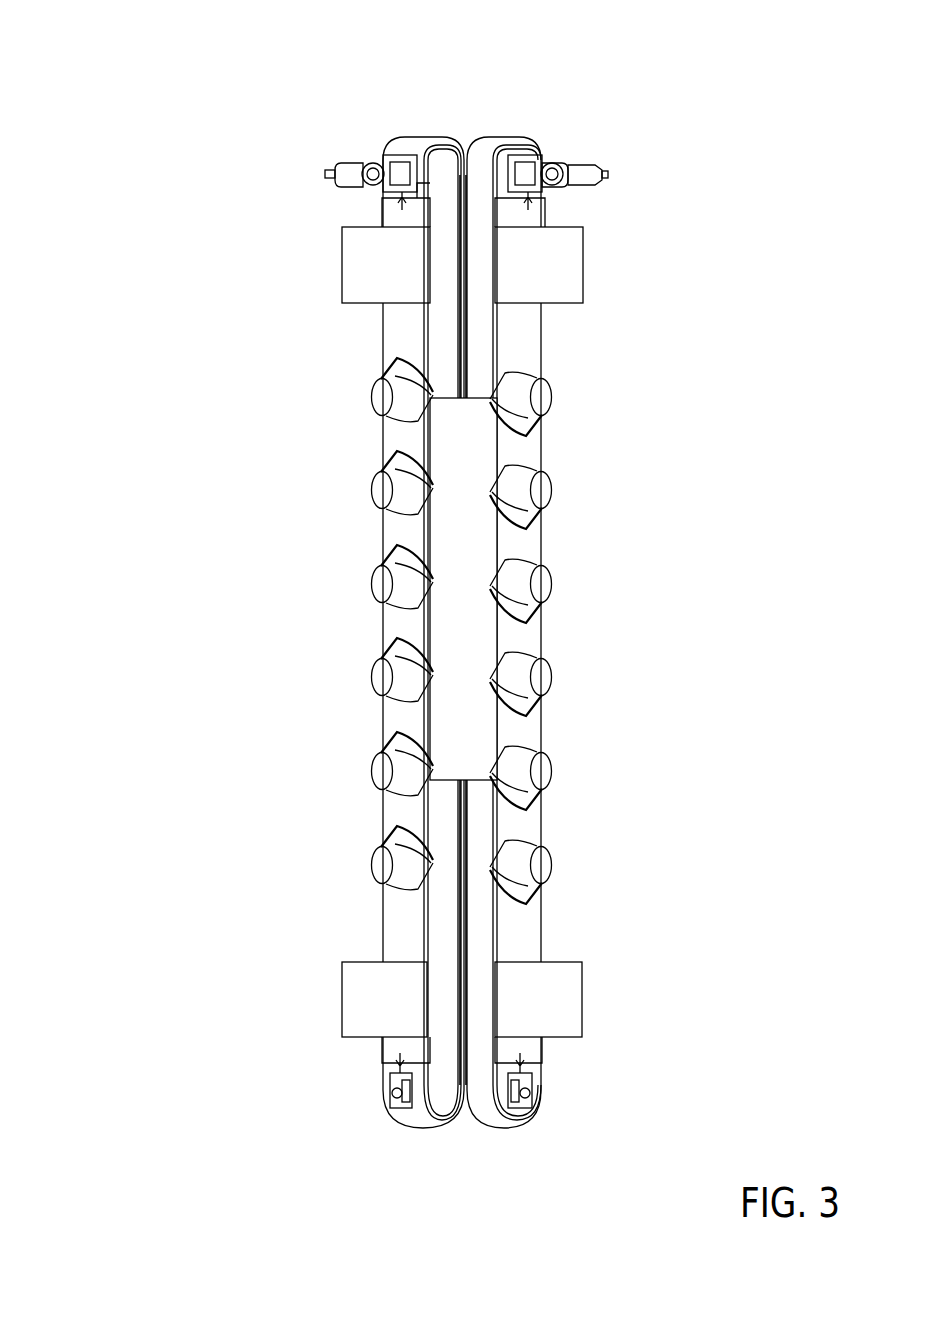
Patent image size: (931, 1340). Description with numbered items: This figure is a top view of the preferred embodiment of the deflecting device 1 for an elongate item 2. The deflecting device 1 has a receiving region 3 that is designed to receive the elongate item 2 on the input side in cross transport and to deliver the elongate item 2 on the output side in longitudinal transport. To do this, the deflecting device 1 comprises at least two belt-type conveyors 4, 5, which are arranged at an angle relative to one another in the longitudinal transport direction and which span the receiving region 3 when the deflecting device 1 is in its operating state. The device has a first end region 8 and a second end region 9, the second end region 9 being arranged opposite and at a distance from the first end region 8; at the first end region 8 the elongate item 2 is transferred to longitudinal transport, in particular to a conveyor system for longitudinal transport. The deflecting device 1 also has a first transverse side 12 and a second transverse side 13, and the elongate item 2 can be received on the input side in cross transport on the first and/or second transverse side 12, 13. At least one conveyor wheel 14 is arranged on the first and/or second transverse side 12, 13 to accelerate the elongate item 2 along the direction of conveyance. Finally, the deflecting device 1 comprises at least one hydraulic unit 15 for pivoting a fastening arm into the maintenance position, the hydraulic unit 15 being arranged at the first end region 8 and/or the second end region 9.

The deflecting device 1 is at (140, 65).
The elongate item 2 is at (465, 462).
The receiving region 3 is at (462, 321).
The belt-type conveyor 4 is at (438, 998).
The belt-type conveyor 5 is at (485, 1005).
The first end region 8 is at (465, 1150).
The second end region 9 is at (467, 115).
The first transverse side 12 is at (215, 603).
The second transverse side 13 is at (687, 596).
The conveyor wheel 14 is at (522, 860).
The hydraulic unit 15 is at (560, 168).